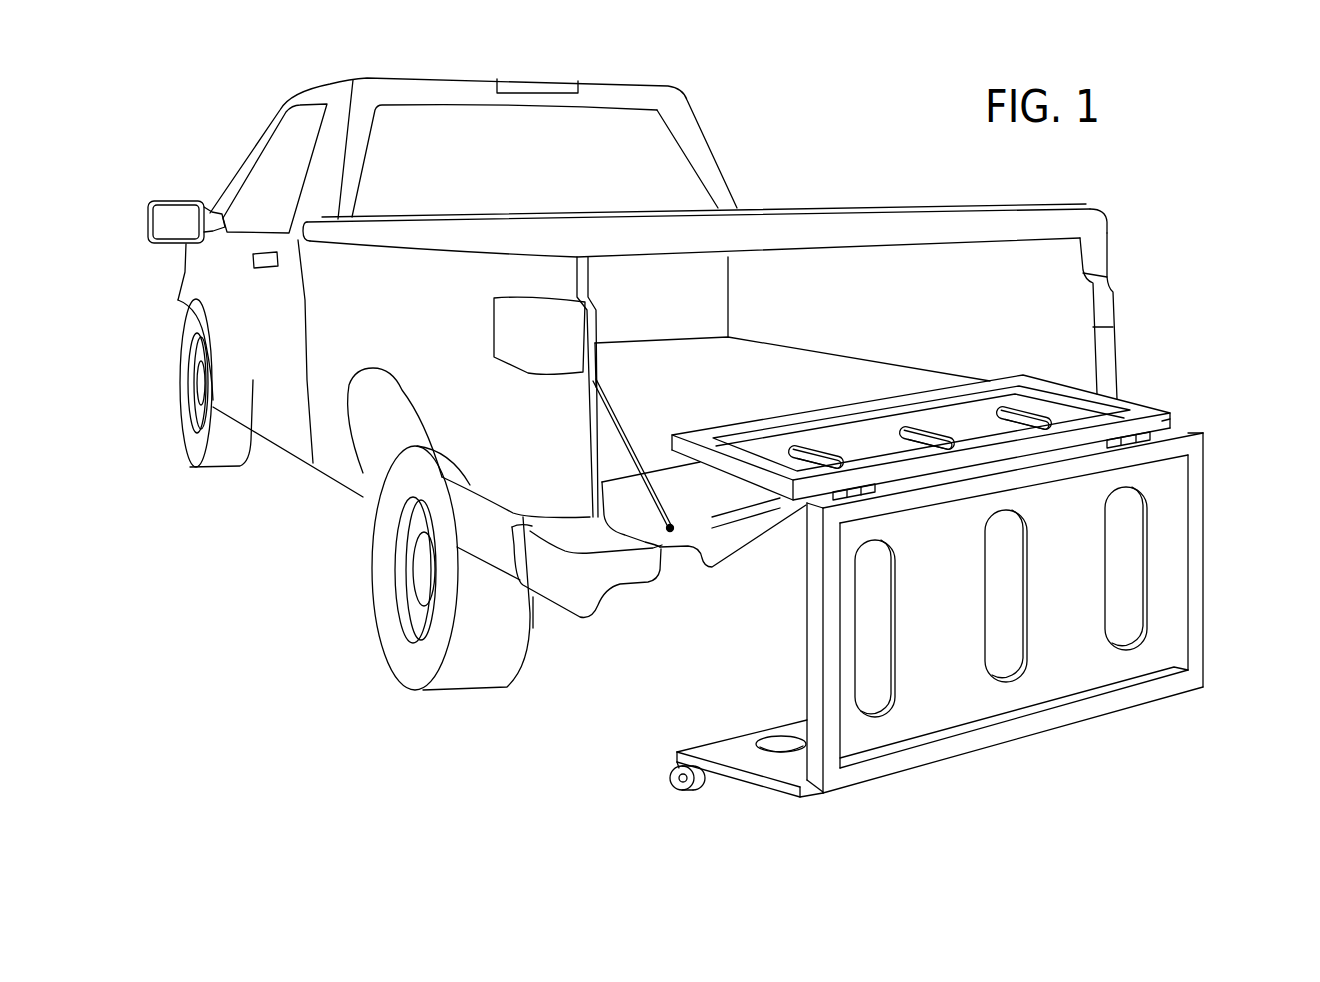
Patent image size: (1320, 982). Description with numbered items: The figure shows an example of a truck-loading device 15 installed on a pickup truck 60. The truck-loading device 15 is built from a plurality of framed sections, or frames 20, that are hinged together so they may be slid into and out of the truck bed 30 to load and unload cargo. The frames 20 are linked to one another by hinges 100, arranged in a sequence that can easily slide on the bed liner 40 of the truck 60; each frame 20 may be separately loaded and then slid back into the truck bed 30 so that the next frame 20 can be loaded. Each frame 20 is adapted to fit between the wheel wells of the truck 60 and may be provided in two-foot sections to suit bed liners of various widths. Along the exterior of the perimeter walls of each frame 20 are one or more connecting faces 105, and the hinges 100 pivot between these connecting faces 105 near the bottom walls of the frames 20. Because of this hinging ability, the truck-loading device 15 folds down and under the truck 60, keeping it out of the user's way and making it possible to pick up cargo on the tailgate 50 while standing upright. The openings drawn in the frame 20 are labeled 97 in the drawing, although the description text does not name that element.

The truck bed 30 is at (1183, 249).
The truck 60 is at (713, 143).
The bed liner 40 is at (832, 380).
The tailgate 50 is at (663, 552).
The truck-loading device 15 is at (1205, 535).
The frame 20 is at (1075, 386).
The slot 97 is at (1057, 622).
The hinge 100 is at (843, 493).
The connecting face 105 is at (1163, 420).